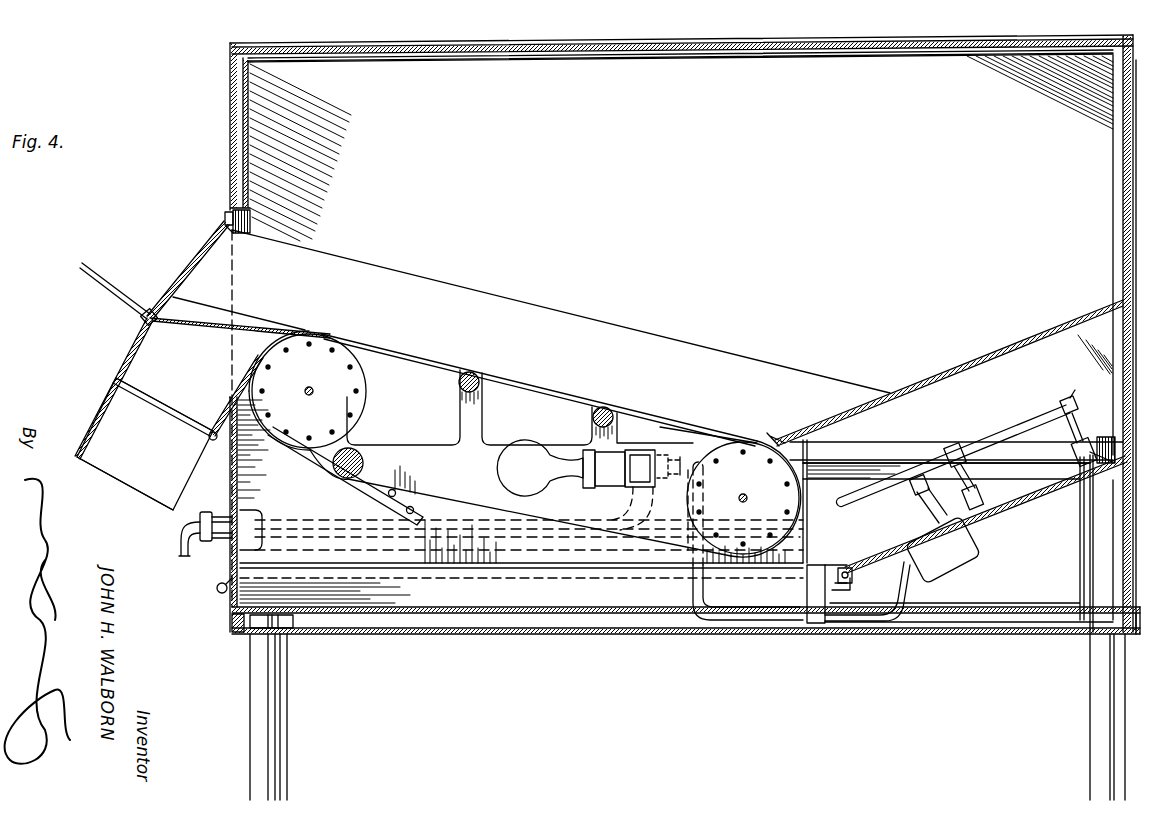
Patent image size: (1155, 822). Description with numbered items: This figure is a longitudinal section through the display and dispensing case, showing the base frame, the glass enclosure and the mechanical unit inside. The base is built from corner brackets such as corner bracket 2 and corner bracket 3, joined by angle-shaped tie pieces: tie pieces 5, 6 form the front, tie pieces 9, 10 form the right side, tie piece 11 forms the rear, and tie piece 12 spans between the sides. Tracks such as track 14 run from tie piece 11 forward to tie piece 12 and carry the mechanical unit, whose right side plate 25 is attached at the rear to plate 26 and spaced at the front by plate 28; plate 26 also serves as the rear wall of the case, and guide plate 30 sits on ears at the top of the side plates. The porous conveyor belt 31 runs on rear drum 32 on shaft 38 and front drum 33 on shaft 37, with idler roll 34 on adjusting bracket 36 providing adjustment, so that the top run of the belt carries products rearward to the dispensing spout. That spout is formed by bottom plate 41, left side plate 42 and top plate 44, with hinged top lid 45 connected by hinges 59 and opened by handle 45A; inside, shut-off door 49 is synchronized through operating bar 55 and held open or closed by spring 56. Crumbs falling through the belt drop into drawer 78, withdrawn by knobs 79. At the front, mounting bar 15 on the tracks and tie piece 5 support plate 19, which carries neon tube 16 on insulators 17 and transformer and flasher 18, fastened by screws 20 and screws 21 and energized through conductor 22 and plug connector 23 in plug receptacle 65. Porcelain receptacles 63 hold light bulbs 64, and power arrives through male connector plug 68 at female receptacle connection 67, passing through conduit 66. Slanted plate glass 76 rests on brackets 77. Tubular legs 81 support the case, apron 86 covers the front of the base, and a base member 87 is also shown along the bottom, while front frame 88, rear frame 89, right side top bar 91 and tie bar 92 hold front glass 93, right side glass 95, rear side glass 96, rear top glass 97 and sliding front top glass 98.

The corner bracket 2 is at (1078, 553).
The corner bracket 3 is at (298, 623).
The tie piece 5 is at (1116, 446).
The tie piece 6 is at (1138, 632).
The tie piece 9 is at (884, 456).
The tie piece 10 is at (533, 617).
The tie piece 11 is at (236, 628).
The tie piece 12 is at (820, 630).
The track 14 is at (427, 565).
The mounting bar 15 is at (836, 582).
The neon tube 16 is at (1034, 428).
The insulators 17 is at (1066, 405).
The transformer and flasher 18 is at (960, 568).
The plate 19 is at (1042, 495).
The screws 20 is at (853, 576).
The screws 21 is at (1108, 470).
The conductor 22 is at (915, 598).
The plug connector 23 is at (688, 436).
The right side plate 25 is at (492, 438).
The plate 26 is at (230, 490).
The plate 28 is at (808, 556).
The guide plate 30 is at (561, 311).
The porous conveyor belt 31 is at (418, 363).
The revolving drum 32 is at (366, 410).
The revolving drum 33 is at (686, 508).
The idler roll 34 is at (366, 463).
The adjusting bracket 36 is at (425, 500).
The shaft 37 is at (743, 498).
The shaft 38 is at (309, 395).
The bottom plate 41 is at (186, 474).
The left side plate 42 is at (118, 478).
The top plate 44 is at (114, 390).
The hinged top lid 45 is at (194, 266).
The handle 45A is at (112, 283).
The shut-off door 49 is at (163, 412).
The operating bar 55 is at (213, 442).
The spring 56 is at (221, 418).
The hinges 59 is at (142, 318).
The porcelain receptacles 63 is at (619, 469).
The electric light bulbs 64 is at (540, 468).
The plug receptacle 65 is at (647, 452).
The conduit 66 is at (344, 522).
The female receptacle connection 67 is at (262, 522).
The male connector plug 68 is at (198, 525).
The slanted plate glass 76 is at (972, 366).
The brackets 77 is at (770, 438).
The drawer 78 is at (232, 600).
The knobs 79 is at (220, 584).
The tubular legs 81 is at (288, 662).
The apron 86 is at (1130, 571).
The base plate 87 is at (603, 632).
The front frame 88 is at (1128, 38).
The rear frame 89 is at (231, 46).
The right side top bar 91 is at (788, 42).
The tie bar 92 is at (700, 44).
The front glass 93 is at (1125, 183).
The right side glass 95 is at (1009, 92).
The rear side glass 96 is at (232, 165).
The rear top glass 97 is at (498, 56).
The front top glass 98 is at (853, 50).